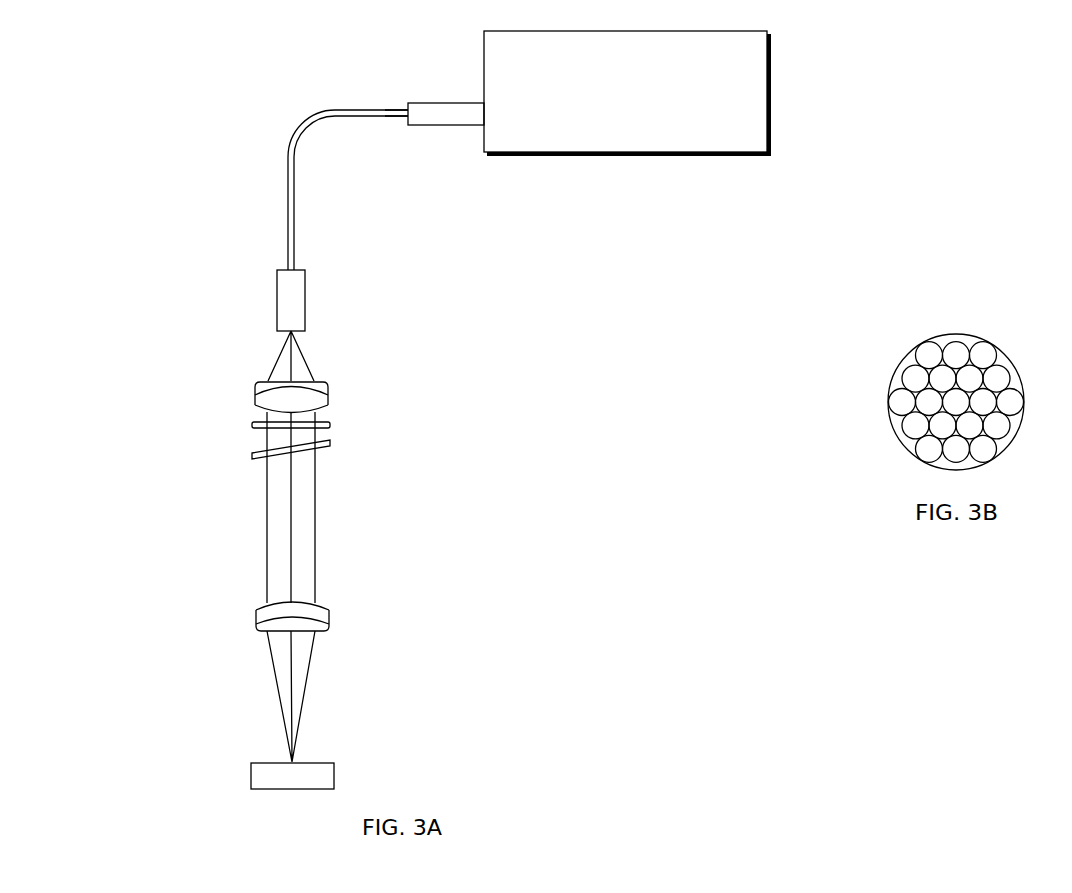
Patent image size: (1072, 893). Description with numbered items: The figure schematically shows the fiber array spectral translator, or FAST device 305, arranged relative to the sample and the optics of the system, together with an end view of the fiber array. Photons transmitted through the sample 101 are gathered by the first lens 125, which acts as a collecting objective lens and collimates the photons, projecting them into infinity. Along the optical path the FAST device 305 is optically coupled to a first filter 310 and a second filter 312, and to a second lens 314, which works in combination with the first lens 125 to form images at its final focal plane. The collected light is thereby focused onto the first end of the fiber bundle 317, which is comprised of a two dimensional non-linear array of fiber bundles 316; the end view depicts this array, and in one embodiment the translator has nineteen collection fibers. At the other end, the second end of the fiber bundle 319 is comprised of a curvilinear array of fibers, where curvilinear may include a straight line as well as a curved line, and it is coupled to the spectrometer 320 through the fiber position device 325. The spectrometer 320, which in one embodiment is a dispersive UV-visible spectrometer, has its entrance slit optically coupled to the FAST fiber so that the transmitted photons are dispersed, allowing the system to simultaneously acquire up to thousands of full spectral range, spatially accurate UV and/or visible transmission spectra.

In FIG. 3A, the sample 101 is at (334, 775).
In FIG. 3A, the first lens 125 is at (256, 625).
In FIG. 3A, the fiber array spectral translator device 305 is at (288, 150).
In FIG. 3A, the first filter 310 is at (252, 455).
In FIG. 3A, the second filter 312 is at (252, 425).
In FIG. 3A, the second lens 314 is at (255, 393).
In FIG. 3B, the two dimensional non-linear array of fiber bundles 316 is at (997, 363).
In FIG. 3A, the first end of the fiber bundle 317 is at (291, 253).
In FIG. 3A, the second end of the fiber bundle 319 is at (385, 117).
In FIG. 3A, the spectrometer 320 is at (644, 106).
In FIG. 3A, the fiber position device 325 is at (440, 102).